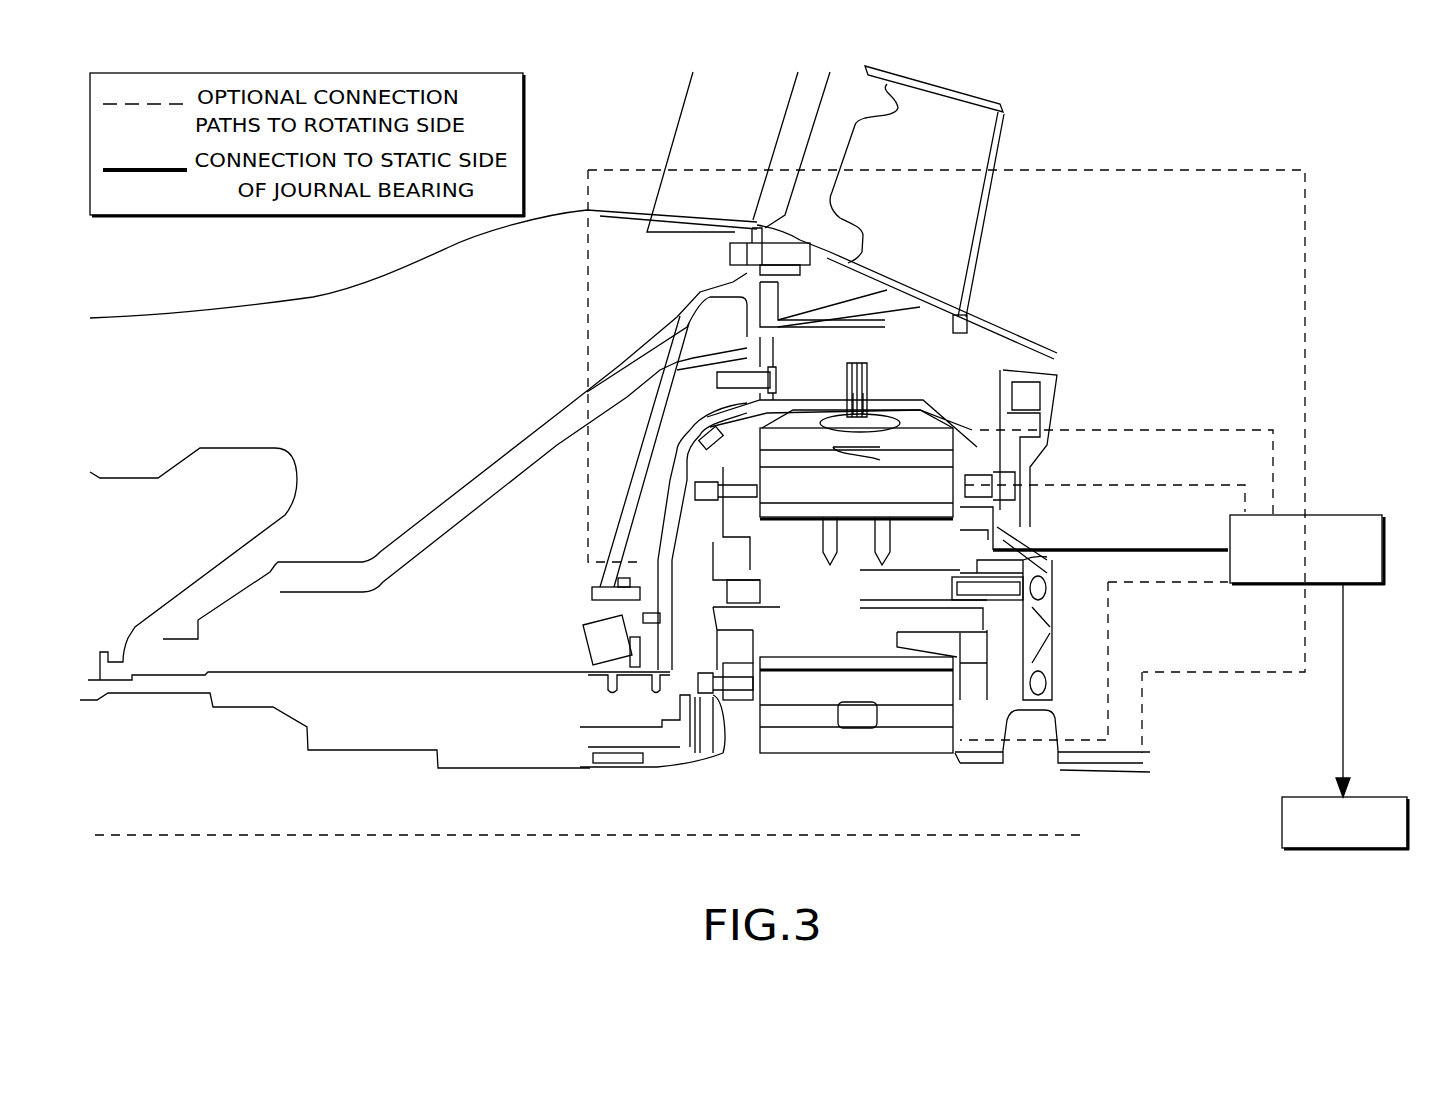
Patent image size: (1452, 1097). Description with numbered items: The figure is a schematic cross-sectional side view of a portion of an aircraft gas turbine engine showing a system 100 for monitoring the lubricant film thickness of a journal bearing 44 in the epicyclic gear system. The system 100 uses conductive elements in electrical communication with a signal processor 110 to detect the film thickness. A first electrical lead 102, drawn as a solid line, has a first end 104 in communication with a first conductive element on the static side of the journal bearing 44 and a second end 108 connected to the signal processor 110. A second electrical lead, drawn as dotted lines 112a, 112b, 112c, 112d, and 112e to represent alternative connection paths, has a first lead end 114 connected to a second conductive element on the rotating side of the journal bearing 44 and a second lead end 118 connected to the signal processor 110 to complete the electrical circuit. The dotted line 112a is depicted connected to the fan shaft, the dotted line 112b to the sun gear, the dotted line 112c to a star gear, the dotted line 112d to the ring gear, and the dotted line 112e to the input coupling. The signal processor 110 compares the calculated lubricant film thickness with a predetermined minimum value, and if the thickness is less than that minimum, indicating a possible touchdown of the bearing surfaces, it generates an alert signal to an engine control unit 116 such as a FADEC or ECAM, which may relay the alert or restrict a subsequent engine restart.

The system 100 is at (1362, 160).
The first electrical lead 102 is at (1130, 548).
The first end 104 is at (995, 552).
The second end 108 is at (1225, 555).
The signal processor 110 is at (1370, 515).
The second electrical lead 112a is at (1147, 172).
The second electrical lead 112b is at (1130, 430).
The second electrical lead 112c is at (1130, 485).
The second electrical lead 112d is at (1170, 585).
The second electrical lead 112e is at (1185, 672).
The first lead end 114 is at (983, 430).
The engine control unit 116 is at (1362, 797).
The second lead end 118 is at (1273, 490).
The journal bearing 44 is at (827, 670).